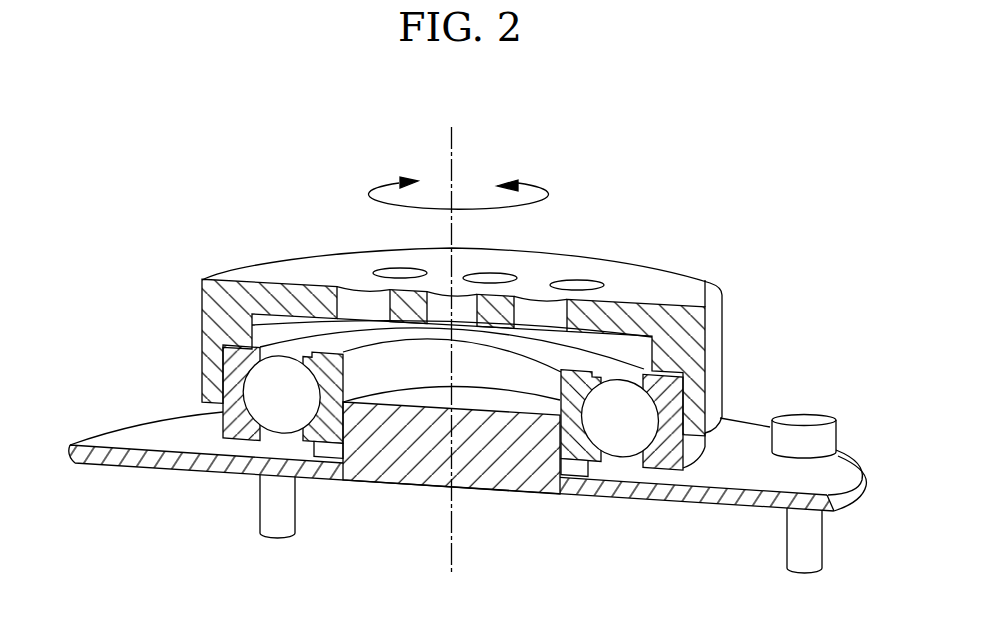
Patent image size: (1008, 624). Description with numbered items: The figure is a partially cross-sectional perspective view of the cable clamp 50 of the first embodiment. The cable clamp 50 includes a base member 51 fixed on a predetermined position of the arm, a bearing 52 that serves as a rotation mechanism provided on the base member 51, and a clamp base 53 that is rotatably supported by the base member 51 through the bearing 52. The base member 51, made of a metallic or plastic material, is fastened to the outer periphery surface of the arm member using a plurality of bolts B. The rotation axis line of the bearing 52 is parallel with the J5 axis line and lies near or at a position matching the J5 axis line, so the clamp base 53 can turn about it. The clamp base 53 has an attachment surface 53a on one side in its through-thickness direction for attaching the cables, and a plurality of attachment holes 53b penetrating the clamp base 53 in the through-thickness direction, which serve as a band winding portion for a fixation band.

The cable clamp 50 is at (214, 246).
The base member 51 is at (748, 447).
The bearing 52 is at (223, 432).
The clamp base 53 is at (215, 310).
The attachment surface 53a is at (682, 288).
The attachment holes 53b is at (393, 272).
The J5 axis line J5 is at (453, 163).
The bolts B is at (803, 417).